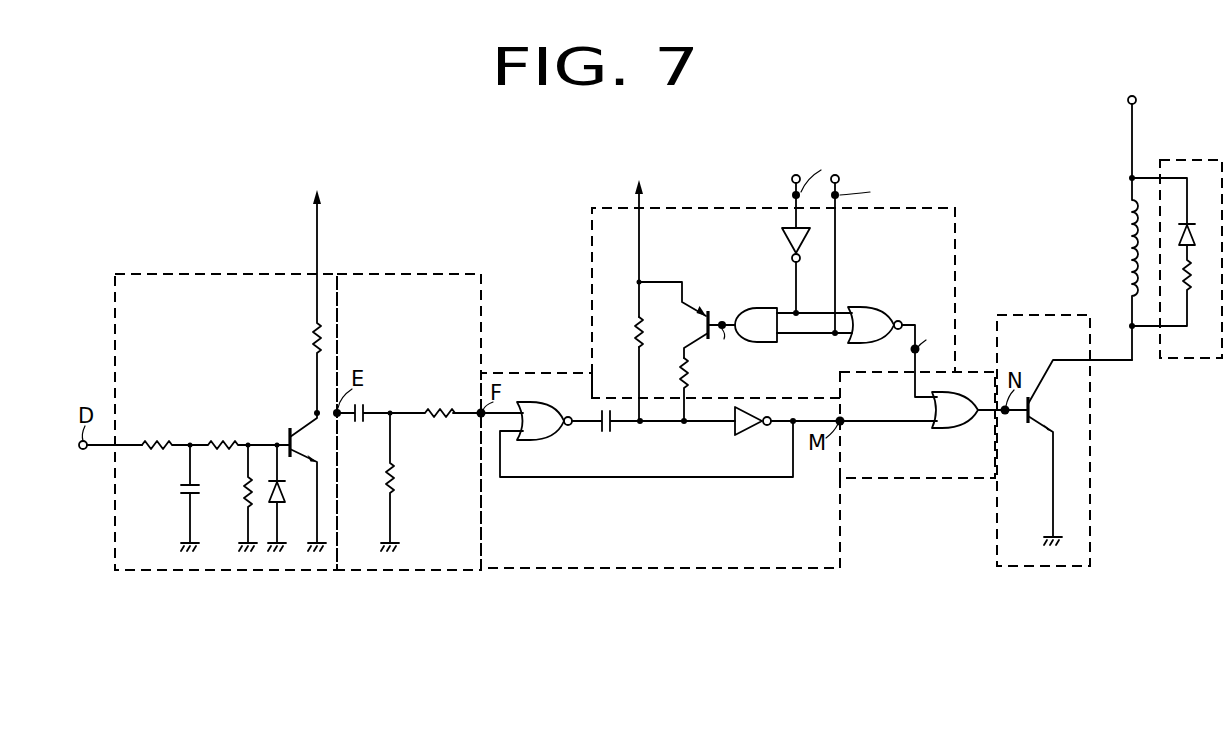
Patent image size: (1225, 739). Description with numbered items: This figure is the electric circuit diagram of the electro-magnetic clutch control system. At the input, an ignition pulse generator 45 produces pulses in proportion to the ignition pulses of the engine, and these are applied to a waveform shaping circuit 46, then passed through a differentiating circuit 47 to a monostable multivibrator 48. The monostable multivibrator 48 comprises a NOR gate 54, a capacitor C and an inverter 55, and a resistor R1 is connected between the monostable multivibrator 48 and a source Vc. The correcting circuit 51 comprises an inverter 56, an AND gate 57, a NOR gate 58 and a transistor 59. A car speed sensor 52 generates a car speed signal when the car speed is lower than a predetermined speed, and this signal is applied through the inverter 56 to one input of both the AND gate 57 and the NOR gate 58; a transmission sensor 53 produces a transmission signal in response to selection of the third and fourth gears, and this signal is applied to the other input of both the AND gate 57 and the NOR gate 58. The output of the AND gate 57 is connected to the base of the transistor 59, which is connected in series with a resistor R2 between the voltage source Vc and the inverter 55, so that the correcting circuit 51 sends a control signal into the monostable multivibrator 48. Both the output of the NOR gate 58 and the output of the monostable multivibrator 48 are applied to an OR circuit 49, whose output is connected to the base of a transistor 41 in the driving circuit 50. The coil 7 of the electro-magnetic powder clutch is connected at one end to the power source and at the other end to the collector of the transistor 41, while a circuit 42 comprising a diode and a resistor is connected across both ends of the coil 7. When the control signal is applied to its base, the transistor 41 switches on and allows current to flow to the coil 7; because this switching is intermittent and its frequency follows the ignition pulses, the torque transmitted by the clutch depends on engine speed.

The coil 7 is at (1121, 236).
The transistor 41 is at (1045, 410).
The circuit comprising a diode and a resistor 42 is at (1186, 159).
The ignition pulse generator 45 is at (83, 450).
The waveform shaping circuit 46 is at (218, 274).
The differentiating circuit 47 is at (441, 274).
The monostable multivibrator 48 is at (661, 488).
The OR circuit 49 is at (930, 478).
The driving circuit 50 is at (1064, 440).
The correcting circuit 51 is at (773, 285).
The car speed sensor 52 is at (795, 178).
The transmission sensor 53 is at (840, 178).
The NOR gate 54 is at (545, 440).
The inverter 55 is at (740, 434).
The inverter 56 is at (782, 244).
The AND gate 57 is at (760, 308).
The NOR gate 58 is at (880, 300).
The transistor 59 is at (704, 327).
The capacitor C is at (653, 436).
The resistor R1 is at (621, 335).
The resistor R2 is at (701, 389).